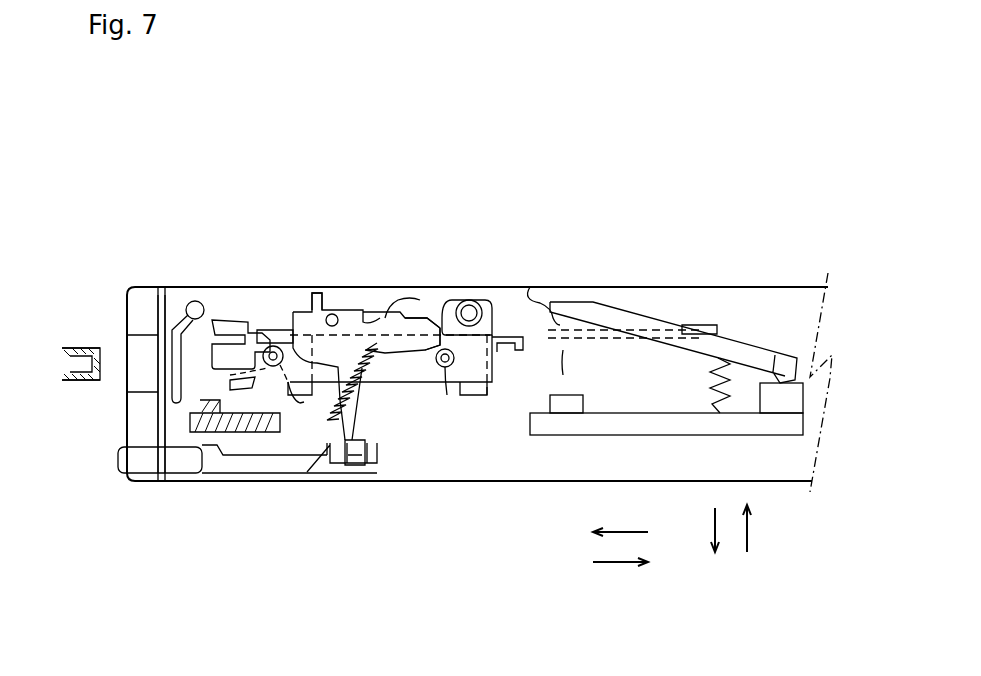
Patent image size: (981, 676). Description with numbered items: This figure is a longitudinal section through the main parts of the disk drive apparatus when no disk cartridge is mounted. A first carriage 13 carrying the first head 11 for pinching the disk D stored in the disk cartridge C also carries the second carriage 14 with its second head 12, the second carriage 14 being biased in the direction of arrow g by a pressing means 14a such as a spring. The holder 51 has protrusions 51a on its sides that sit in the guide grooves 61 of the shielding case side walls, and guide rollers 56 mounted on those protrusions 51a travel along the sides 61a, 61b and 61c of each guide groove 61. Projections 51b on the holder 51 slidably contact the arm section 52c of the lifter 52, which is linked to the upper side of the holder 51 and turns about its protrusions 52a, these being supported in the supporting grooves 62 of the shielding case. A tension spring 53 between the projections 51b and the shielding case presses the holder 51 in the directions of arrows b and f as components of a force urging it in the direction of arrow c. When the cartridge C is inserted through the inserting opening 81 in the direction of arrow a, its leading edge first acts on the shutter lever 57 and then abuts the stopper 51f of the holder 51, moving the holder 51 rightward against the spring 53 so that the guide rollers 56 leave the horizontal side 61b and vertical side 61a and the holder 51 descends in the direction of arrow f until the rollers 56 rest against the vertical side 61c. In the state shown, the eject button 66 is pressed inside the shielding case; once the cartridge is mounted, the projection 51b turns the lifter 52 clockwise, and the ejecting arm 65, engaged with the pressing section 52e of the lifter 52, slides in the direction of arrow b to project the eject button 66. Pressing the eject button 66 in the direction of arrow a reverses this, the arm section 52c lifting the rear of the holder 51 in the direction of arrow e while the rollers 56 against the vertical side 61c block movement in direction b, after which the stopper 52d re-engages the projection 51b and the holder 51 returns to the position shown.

The inserting opening 81 is at (126, 350).
The disk cartridge C is at (80, 347).
The disk D is at (60, 368).
The eject button 66 is at (120, 460).
The ejecting arm 65 is at (268, 484).
The tension spring 53 is at (336, 484).
The pressing section 52e is at (372, 472).
The guide groove 61 is at (247, 287).
The vertical side 61a is at (232, 384).
The horizontal side 61b is at (270, 368).
The vertical side 61c is at (338, 412).
The guide roller 56 is at (263, 287).
The holder 51 is at (285, 290).
The protrusion 51a is at (447, 364).
The protrusion 51b is at (420, 290).
The stopper 51f is at (517, 345).
The lifter 52 is at (373, 290).
The protrusion 52a is at (333, 292).
The arm section 52c is at (462, 290).
The stopper 52d is at (390, 290).
The supporting groove 62 is at (343, 288).
The arrow c is at (397, 402).
The second head 12 is at (533, 292).
The second carriage 14 is at (617, 310).
The pressing means 14a is at (712, 380).
The shutter lever 57 is at (703, 320).
The first carriage 13 is at (640, 430).
The first head 11 is at (575, 395).
The arrow g is at (551, 360).
The arrow a is at (617, 563).
The arrow b is at (618, 530).
The arrow e is at (747, 535).
The arrow f is at (713, 528).